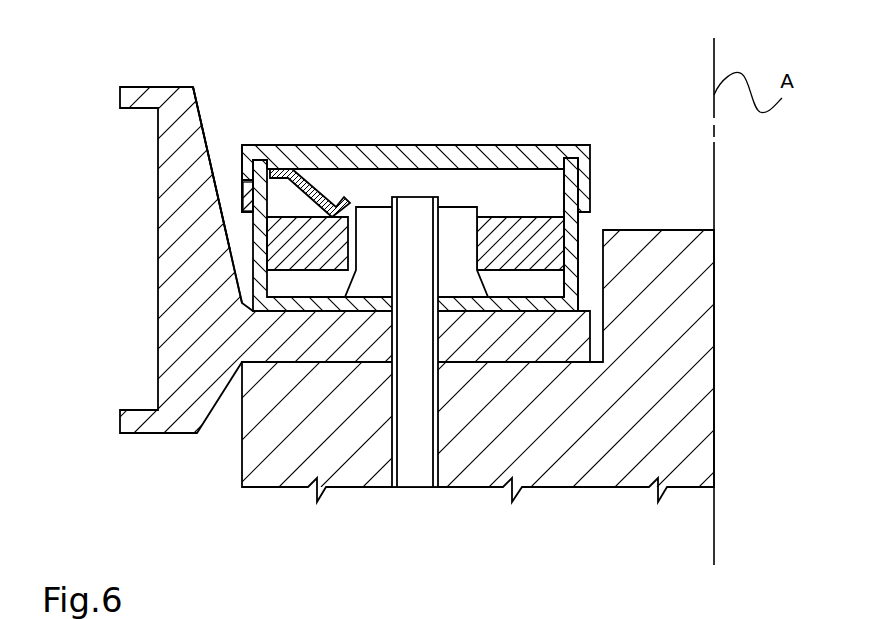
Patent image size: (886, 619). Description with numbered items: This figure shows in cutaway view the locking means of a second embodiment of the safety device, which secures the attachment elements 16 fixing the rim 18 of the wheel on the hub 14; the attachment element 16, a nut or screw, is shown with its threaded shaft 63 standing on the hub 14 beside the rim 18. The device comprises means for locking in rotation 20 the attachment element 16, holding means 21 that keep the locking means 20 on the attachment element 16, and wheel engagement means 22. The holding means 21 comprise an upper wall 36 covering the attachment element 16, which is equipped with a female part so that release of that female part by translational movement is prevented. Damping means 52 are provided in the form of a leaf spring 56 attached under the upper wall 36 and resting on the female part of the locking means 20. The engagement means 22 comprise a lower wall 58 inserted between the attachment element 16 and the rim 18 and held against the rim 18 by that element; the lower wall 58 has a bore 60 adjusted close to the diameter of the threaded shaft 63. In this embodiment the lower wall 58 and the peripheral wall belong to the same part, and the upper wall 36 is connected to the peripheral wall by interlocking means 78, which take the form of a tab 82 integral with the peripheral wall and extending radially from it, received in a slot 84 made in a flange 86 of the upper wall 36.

The hub 14 is at (363, 468).
The attachment element 16 is at (464, 196).
The rim 18 is at (174, 396).
The means for locking in rotation 20 is at (237, 258).
The holding means 21 is at (271, 84).
The wheel engagement means 22 is at (280, 284).
The upper wall 36 is at (395, 160).
The damping means 52 is at (279, 203).
The leaf spring 56 is at (322, 200).
The lower wall 58 is at (286, 302).
The bore 60 is at (352, 303).
The threaded shaft 63 is at (416, 470).
The interlocking means 78 is at (229, 165).
The tab 82 is at (245, 176).
The slot 84 is at (248, 194).
The flange 86 is at (576, 180).